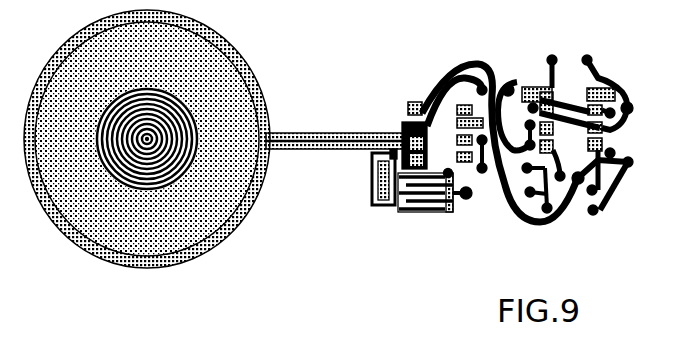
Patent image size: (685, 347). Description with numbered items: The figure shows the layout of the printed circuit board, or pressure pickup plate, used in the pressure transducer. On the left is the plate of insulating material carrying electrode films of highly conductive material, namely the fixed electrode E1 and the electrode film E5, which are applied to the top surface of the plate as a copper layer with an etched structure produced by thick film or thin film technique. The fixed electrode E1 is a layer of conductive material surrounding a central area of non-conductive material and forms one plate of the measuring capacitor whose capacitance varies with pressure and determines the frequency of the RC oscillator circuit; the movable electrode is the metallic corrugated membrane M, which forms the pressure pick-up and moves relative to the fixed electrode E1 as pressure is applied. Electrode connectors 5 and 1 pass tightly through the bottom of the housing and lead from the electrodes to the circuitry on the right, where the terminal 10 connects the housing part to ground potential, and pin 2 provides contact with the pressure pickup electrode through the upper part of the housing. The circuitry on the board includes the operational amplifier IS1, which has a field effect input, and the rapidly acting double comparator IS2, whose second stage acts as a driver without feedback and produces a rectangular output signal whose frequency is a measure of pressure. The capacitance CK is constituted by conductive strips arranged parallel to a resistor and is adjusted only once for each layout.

The terminal 10 is at (473, 63).
The electrode connector 5 is at (326, 133).
The electrode connector 1 is at (384, 206).
The fixed electrode E1 is at (230, 188).
The electrode film E5 is at (262, 167).
The capacitance CK is at (435, 206).
The corrugated membrane M is at (549, 103).
The operational amplifier IS1 is at (460, 137).
The double comparator IS2 is at (577, 135).
The pin 2 is at (526, 146).